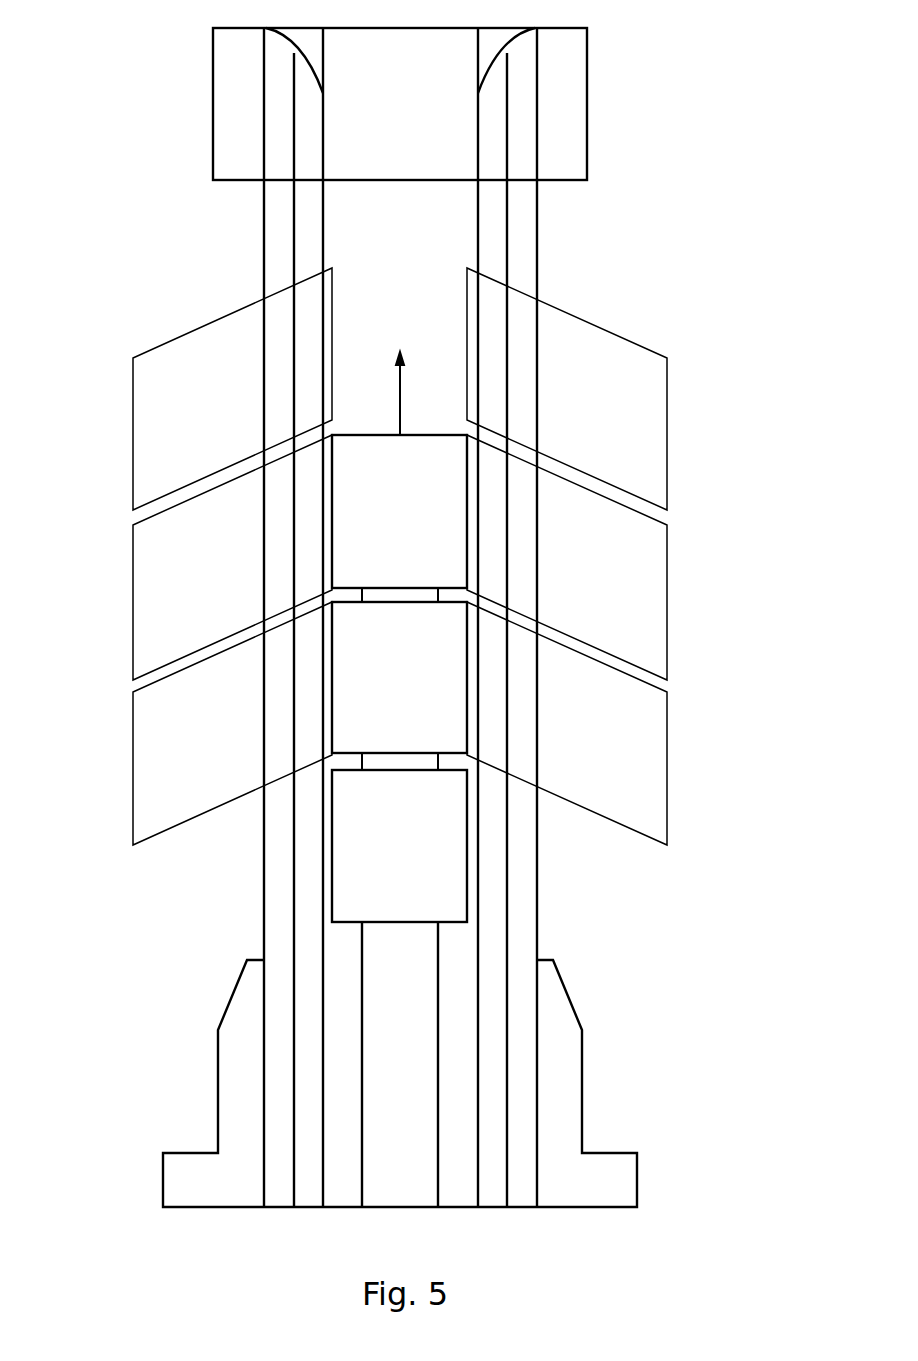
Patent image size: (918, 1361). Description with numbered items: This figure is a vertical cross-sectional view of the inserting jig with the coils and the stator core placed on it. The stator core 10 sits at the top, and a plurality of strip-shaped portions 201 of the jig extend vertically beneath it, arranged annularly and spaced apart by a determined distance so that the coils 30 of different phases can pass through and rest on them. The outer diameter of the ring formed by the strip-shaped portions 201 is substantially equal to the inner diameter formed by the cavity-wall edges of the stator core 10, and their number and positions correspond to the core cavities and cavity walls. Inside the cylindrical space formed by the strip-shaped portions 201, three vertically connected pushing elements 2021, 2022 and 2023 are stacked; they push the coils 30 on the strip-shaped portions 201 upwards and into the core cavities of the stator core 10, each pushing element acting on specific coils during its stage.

The stator core 10 is at (565, 117).
The strip-shaped portion 201 is at (520, 232).
The coil 30 is at (155, 450).
The pushing element 2021 is at (399, 511).
The pushing element 2022 is at (399, 677).
The pushing element 2023 is at (399, 846).